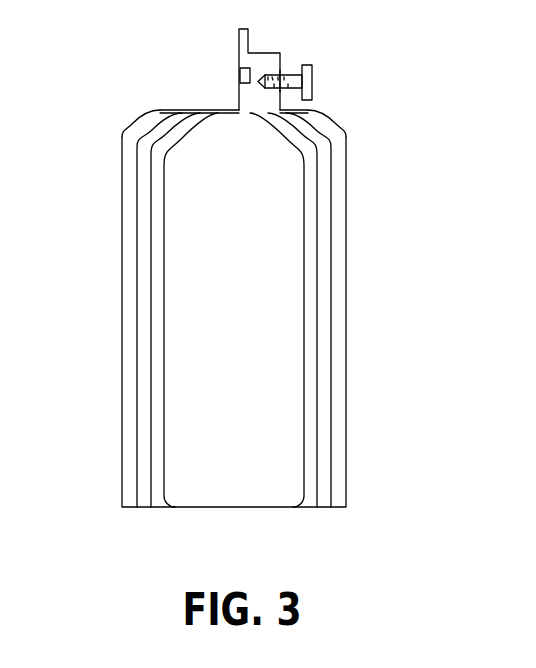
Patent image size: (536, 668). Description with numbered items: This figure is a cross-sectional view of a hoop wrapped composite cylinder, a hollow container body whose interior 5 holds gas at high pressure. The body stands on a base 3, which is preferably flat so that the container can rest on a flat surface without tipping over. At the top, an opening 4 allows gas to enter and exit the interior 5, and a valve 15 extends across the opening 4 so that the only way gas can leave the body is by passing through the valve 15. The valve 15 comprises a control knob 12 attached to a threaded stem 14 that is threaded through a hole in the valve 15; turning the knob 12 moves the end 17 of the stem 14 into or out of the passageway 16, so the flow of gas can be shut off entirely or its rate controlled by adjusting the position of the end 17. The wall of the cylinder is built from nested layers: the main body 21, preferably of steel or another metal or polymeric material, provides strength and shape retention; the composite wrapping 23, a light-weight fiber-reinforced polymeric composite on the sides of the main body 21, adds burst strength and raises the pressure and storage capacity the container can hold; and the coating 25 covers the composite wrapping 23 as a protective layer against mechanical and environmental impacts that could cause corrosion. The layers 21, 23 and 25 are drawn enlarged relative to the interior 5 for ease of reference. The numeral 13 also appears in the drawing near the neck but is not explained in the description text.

The base 3 is at (232, 507).
The opening 4 is at (234, 123).
The interior 5 is at (234, 403).
The control knob 12 is at (313, 82).
The neck opening 13 is at (250, 30).
The threaded stem 14 is at (281, 74).
The valve 15 is at (379, 47).
The passageway 16 is at (252, 62).
The end of stem 17 is at (261, 86).
The main body layer 21 is at (158, 353).
The composite wrapping 23 is at (143, 397).
The coating 25 is at (127, 440).